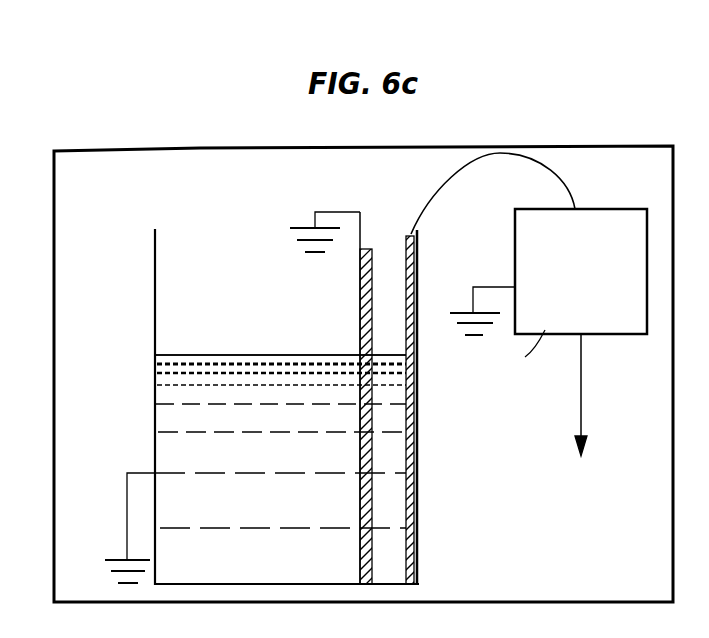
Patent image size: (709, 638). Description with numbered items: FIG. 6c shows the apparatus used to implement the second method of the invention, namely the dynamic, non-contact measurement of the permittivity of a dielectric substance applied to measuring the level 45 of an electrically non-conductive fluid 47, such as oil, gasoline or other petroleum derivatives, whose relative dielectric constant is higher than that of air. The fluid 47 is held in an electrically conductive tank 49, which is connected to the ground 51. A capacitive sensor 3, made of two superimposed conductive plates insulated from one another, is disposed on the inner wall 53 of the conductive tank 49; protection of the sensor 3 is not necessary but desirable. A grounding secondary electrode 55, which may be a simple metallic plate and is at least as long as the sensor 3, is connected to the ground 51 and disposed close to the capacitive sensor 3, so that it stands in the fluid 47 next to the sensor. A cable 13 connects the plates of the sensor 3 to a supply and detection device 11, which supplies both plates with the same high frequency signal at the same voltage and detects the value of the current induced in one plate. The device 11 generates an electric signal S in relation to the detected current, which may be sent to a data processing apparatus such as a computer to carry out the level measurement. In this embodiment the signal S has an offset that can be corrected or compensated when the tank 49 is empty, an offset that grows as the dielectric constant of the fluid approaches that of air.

The electrically conductive tank 49 is at (153, 254).
The electrically non-conductive fluid 47 is at (294, 464).
The level 45 is at (276, 355).
The grounding secondary electrode 55 is at (359, 340).
The ground 51 is at (335, 212).
The capacitive sensor 3 is at (404, 236).
The inner wall 53 is at (411, 232).
The cable 13 is at (447, 180).
The supply and detection device 11 is at (590, 278).
The electric signal S is at (583, 408).